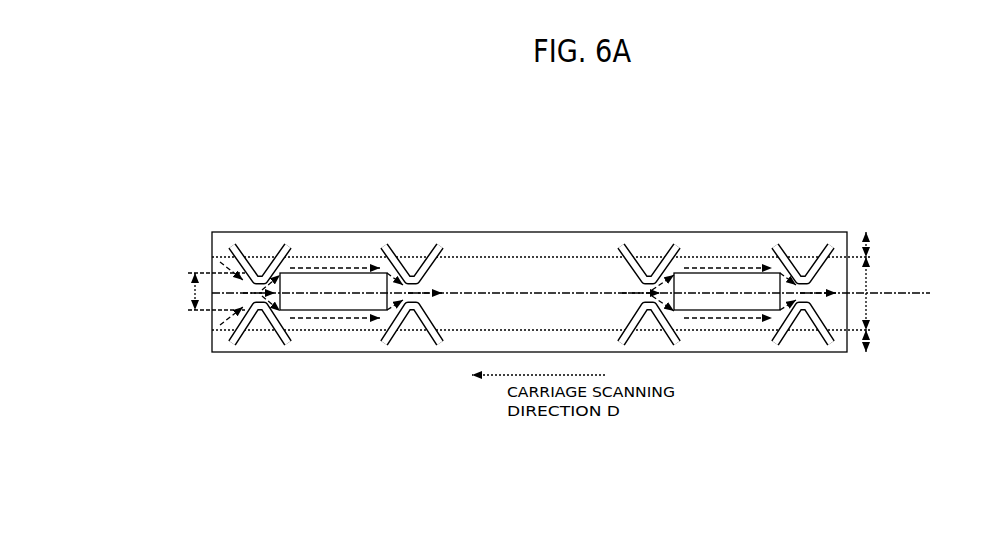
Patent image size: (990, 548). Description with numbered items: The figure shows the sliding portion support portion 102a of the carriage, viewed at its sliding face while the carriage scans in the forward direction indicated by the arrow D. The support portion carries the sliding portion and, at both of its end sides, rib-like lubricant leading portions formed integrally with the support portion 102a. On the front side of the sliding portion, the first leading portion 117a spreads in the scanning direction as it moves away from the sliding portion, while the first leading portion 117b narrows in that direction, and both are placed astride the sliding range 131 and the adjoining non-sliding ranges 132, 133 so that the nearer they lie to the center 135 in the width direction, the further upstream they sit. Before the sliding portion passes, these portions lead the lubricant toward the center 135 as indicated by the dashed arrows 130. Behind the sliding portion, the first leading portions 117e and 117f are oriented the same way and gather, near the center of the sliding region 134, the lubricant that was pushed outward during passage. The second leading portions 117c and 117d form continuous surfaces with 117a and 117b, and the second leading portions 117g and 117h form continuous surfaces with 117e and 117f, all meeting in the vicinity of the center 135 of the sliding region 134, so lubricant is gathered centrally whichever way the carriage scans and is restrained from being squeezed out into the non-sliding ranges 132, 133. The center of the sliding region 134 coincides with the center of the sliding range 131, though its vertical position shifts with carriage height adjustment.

The sliding portion support portion 102a is at (748, 245).
The first leading portion 117a is at (238, 244).
The first leading portion 117b is at (234, 349).
The second leading portion 117c is at (280, 244).
The second leading portion 117d is at (281, 349).
The first leading portion 117e is at (390, 244).
The first leading portion 117f is at (387, 349).
The second leading portion 117g is at (436, 244).
The second leading portion 117h is at (436, 349).
The dashed arrows 130 is at (527, 293).
The sliding range 131 is at (868, 305).
The non-sliding range 132 is at (868, 240).
The non-sliding range 133 is at (865, 335).
The sliding region 134 is at (195, 292).
The center 135 is at (917, 292).